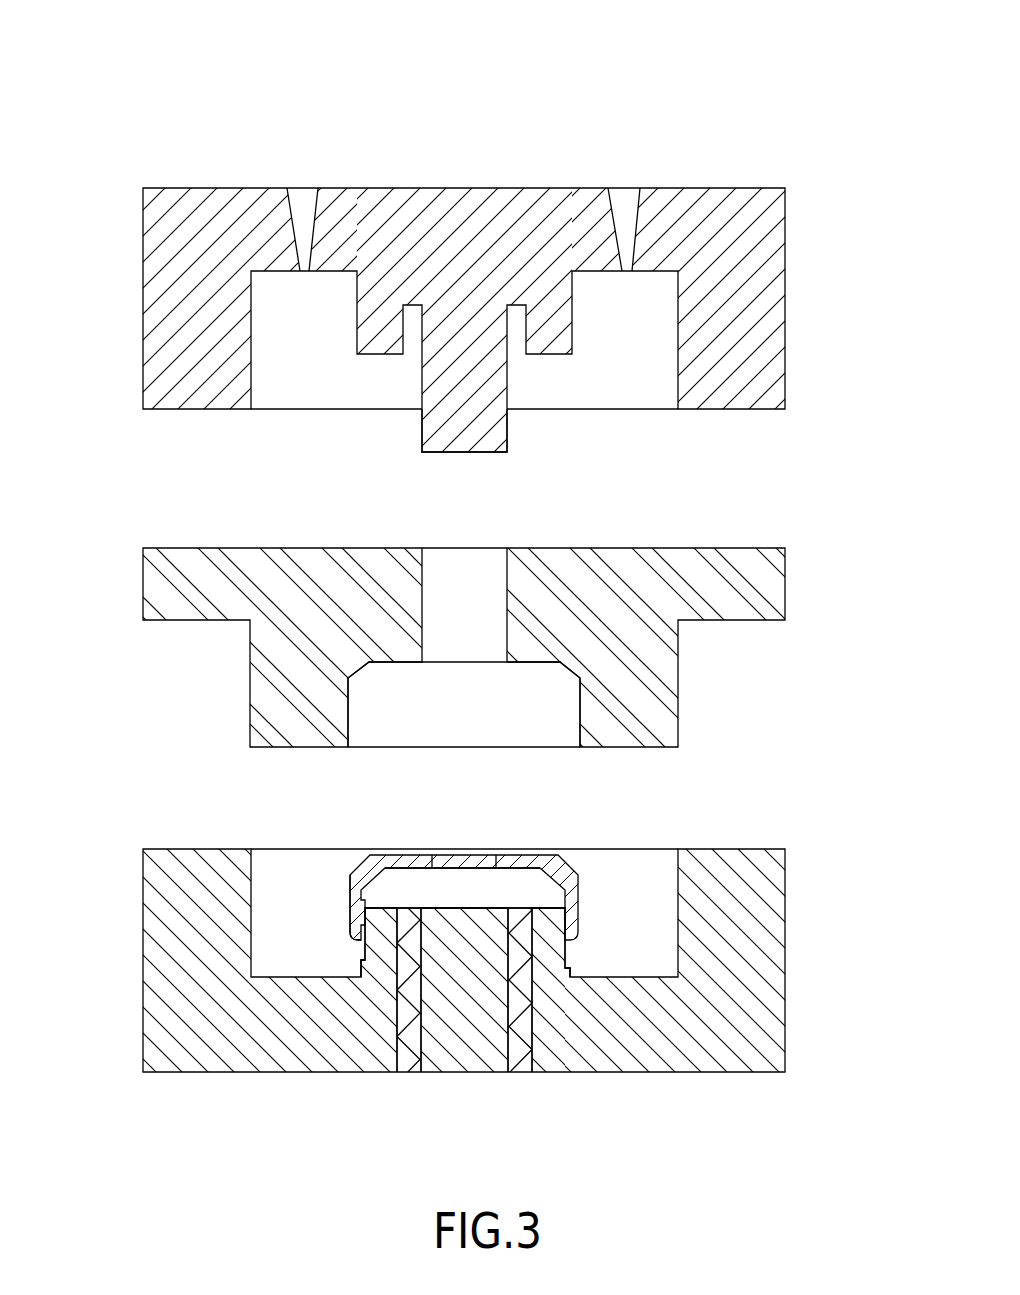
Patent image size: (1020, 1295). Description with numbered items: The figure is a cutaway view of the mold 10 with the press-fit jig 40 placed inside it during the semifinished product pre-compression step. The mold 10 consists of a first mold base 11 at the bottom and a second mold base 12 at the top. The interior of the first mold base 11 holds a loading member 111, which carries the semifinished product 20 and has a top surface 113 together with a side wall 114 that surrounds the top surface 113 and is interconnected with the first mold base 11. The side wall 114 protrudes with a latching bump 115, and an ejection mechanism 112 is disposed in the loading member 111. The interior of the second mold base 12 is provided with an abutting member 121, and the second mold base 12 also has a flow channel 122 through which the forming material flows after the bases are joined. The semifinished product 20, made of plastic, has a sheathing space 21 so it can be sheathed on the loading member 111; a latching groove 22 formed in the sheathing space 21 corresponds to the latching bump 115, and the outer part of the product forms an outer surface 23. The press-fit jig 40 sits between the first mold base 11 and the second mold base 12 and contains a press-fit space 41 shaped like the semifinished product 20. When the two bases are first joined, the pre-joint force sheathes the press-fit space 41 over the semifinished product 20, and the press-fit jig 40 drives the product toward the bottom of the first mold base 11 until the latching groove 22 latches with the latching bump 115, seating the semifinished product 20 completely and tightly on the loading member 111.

The mold 10 is at (807, 30).
The first mold base 11 is at (502, 970).
The loading member 111 is at (427, 970).
The ejection mechanism 112 is at (522, 1043).
The top surface 113 is at (452, 907).
The side wall 114 is at (567, 967).
The latching bump 115 is at (362, 957).
The second mold base 12 is at (508, 294).
The abutting member 121 is at (427, 423).
The flow channel 122 is at (623, 207).
The semifinished product 20 is at (448, 862).
The sheathing space 21 is at (410, 888).
The latching groove 22 is at (350, 910).
The outer surface 23 is at (522, 856).
The press-fit jig 40 is at (416, 640).
The press-fit space 41 is at (368, 713).